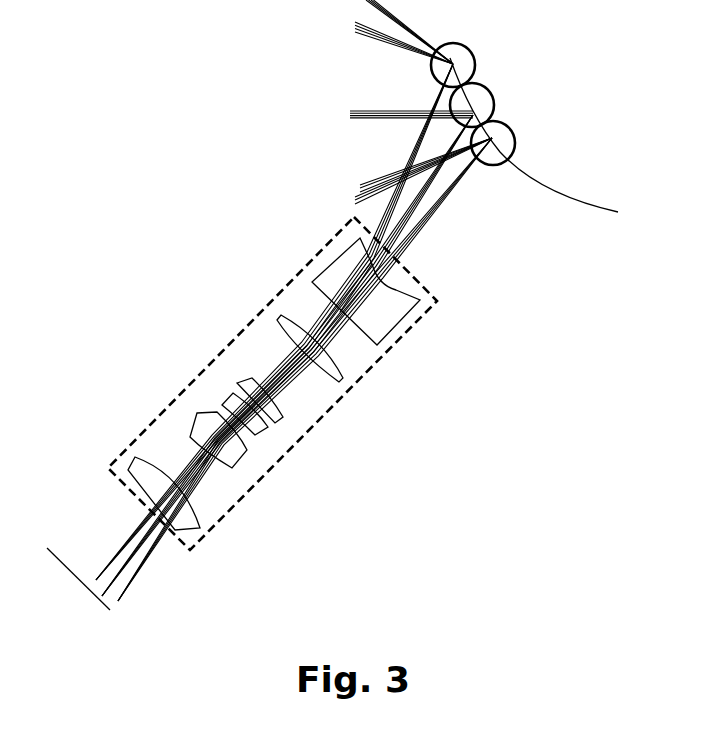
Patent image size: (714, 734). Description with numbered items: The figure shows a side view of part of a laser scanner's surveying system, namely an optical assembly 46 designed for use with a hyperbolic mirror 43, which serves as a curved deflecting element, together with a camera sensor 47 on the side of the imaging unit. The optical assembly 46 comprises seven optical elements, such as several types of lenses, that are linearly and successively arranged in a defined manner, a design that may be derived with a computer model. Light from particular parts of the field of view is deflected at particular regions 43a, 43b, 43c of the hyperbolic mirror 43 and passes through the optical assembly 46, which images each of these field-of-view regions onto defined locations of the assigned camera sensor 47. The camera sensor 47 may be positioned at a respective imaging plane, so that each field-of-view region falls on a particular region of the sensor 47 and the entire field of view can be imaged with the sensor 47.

The hyperbolic mirror 43 is at (560, 185).
The region of the hyperbolic mirror 43a is at (468, 57).
The region of the hyperbolic mirror 43b is at (477, 102).
The region of the hyperbolic mirror 43c is at (505, 135).
The optical assembly 46 is at (298, 435).
The camera sensor 47 is at (90, 588).